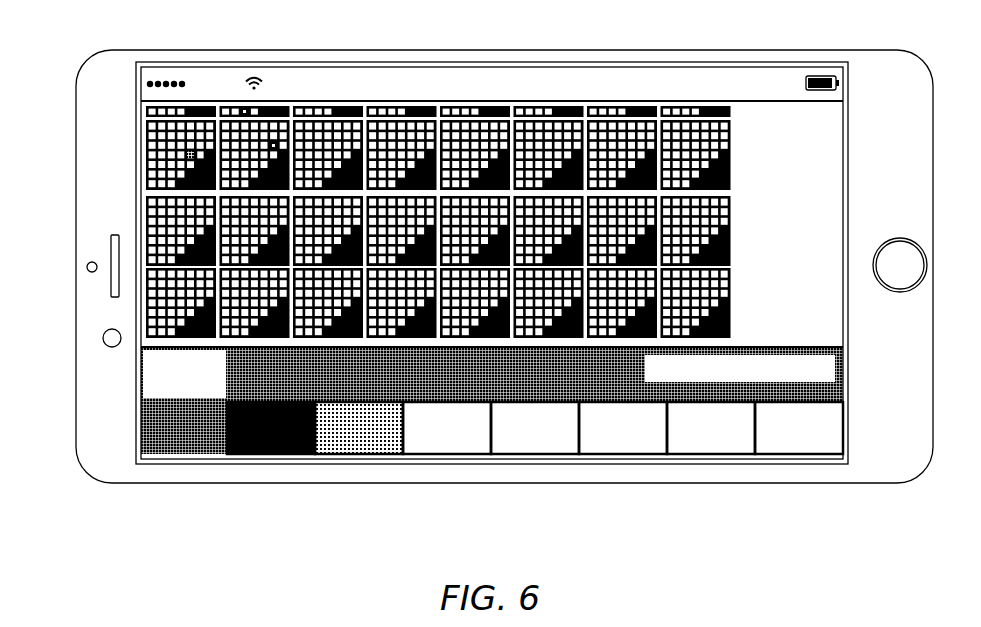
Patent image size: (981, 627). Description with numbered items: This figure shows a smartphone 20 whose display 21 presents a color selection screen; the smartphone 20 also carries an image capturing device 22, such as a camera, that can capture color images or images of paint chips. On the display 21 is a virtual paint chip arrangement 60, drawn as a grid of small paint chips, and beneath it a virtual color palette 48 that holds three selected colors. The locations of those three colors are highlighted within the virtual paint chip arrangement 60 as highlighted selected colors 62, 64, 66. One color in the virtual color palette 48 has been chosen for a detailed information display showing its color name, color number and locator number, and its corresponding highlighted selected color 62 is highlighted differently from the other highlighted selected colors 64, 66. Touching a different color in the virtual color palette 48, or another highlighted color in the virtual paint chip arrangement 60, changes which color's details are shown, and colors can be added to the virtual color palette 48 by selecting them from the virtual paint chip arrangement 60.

The smartphone 20 is at (282, 556).
The display 21 is at (812, 195).
The image capturing device 22 is at (106, 332).
The virtual color palette 48 is at (140, 450).
The virtual paint chip arrangement 60 is at (746, 156).
The highlighted selected color 62 is at (190, 152).
The highlighted selected color 64 is at (248, 109).
The highlighted selected color 66 is at (278, 146).